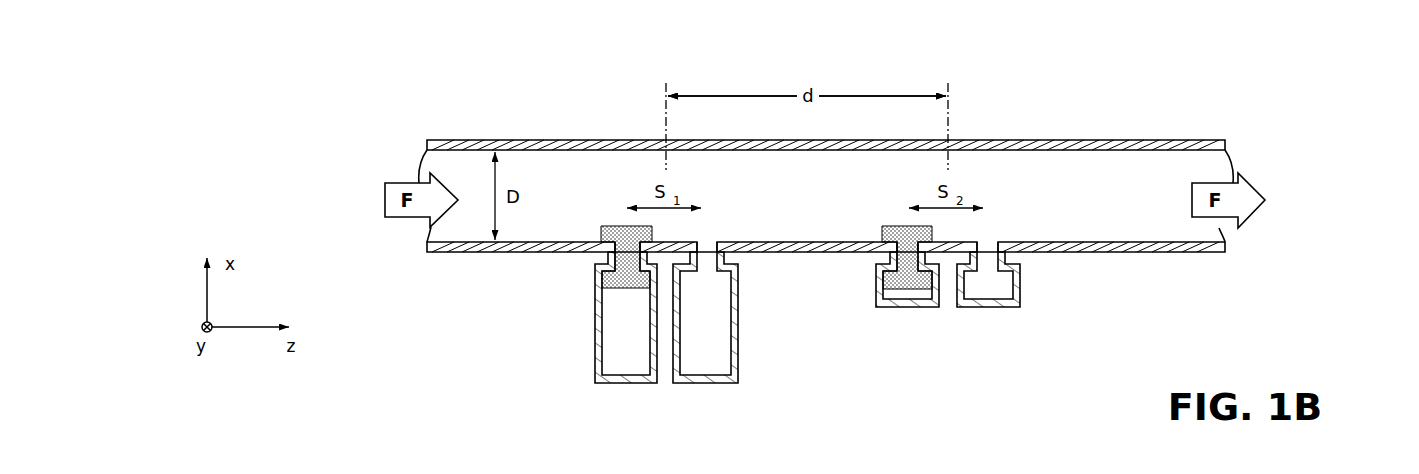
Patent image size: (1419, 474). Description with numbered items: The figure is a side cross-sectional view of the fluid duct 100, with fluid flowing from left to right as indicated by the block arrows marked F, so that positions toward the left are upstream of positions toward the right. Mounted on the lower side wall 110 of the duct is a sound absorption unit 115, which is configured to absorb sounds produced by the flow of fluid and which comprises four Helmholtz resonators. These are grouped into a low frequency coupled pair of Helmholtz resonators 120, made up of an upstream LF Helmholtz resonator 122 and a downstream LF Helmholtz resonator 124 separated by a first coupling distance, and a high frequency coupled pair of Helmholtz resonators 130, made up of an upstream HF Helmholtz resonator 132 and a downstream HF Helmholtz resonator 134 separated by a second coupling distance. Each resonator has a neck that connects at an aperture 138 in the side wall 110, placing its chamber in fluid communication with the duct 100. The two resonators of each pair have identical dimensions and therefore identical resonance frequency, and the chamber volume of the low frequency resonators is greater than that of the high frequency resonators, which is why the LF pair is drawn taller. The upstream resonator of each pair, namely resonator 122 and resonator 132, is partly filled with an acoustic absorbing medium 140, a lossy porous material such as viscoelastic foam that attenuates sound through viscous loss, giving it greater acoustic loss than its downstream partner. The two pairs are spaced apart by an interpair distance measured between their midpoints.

The fluid duct 100 is at (433, 86).
The side wall 110 is at (578, 136).
The sound absorption unit 115 is at (580, 430).
The low frequency coupled pair of Helmholtz resonators 120 is at (750, 385).
The upstream LF Helmholtz resonator 122 is at (592, 360).
The downstream LF Helmholtz resonator 124 is at (741, 360).
The high frequency coupled pair of Helmholtz resonators 130 is at (1035, 307).
The upstream HF Helmholtz resonator 132 is at (873, 285).
The downstream HF Helmholtz resonator 134 is at (1023, 285).
The aperture 138 is at (625, 245).
The acoustic absorbing medium 140 is at (618, 283).